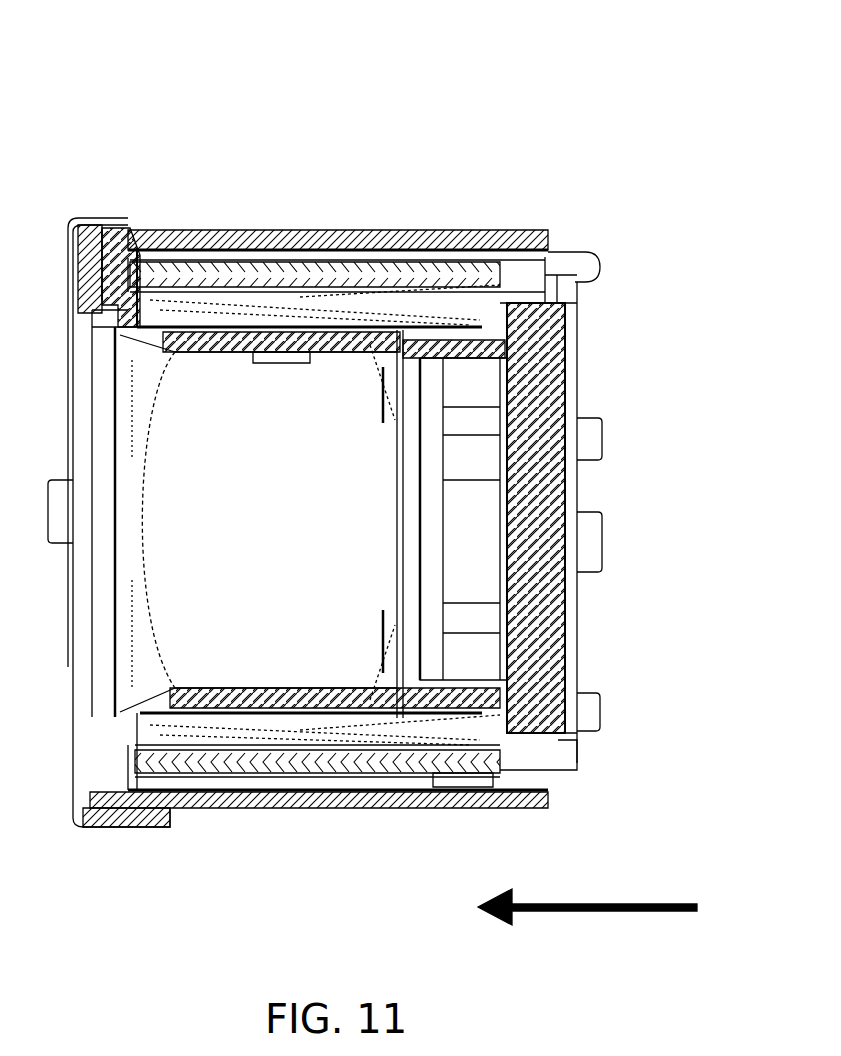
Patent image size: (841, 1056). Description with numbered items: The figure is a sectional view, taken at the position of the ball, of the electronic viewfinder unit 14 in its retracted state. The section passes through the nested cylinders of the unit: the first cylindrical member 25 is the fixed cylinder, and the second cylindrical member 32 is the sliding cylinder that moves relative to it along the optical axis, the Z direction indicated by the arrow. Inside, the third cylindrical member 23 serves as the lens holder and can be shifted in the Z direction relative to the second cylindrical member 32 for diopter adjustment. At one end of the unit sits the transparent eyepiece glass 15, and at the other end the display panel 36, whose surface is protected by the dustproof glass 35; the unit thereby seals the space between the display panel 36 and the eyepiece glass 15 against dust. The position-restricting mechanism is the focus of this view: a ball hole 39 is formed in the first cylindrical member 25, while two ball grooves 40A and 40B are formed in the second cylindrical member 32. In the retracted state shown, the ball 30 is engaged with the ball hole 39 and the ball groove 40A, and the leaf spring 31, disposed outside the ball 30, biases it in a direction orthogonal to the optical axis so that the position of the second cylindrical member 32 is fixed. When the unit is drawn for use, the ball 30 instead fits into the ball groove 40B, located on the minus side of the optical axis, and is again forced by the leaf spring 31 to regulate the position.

The electronic viewfinder unit 14 is at (697, 54).
The eyepiece glass 15 is at (78, 824).
The third cylindrical member 23 is at (218, 822).
The first cylindrical member 25 is at (255, 265).
The ball 30 is at (142, 222).
The leaf spring 31 is at (210, 262).
The second cylindrical member 32 is at (307, 290).
The dustproof glass 35 is at (400, 690).
The display panel 36 is at (548, 262).
The ball hole 39 is at (173, 225).
The ball groove 40A is at (93, 218).
The ball groove 40B is at (407, 290).